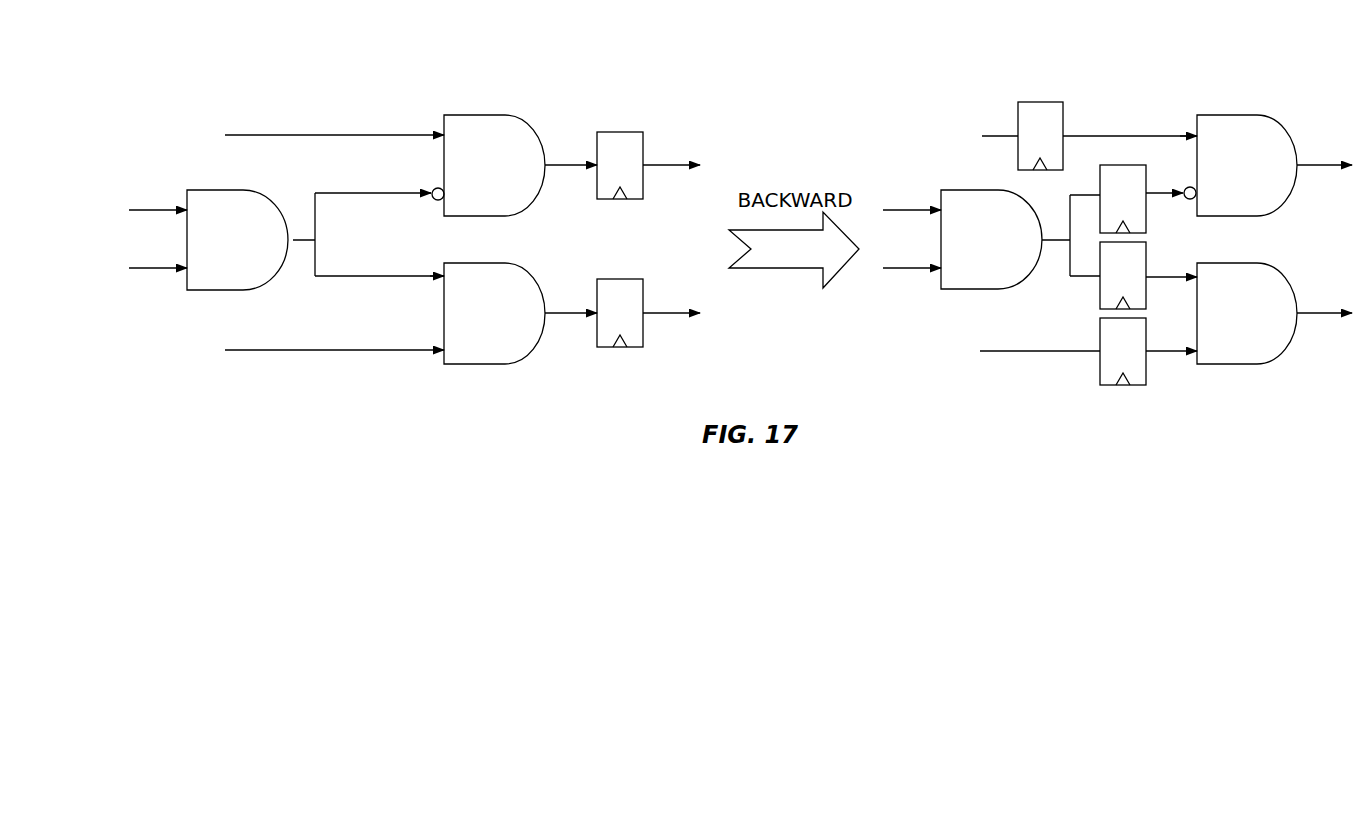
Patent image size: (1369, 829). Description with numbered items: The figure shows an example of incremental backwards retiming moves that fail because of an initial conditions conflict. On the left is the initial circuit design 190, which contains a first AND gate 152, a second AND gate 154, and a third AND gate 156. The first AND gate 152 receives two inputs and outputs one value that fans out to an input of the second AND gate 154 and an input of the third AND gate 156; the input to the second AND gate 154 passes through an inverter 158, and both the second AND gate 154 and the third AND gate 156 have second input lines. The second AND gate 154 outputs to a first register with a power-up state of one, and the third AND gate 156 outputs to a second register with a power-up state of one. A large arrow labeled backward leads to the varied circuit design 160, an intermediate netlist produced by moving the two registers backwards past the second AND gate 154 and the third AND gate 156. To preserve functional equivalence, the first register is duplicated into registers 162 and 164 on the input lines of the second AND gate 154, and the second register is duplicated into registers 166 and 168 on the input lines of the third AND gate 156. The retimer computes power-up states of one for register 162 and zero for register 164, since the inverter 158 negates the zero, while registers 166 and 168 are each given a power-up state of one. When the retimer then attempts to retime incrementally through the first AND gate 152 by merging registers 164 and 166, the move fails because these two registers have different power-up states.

The original circuit 190 is at (258, 61).
The varied circuit design 160 is at (1011, 62).
The first AND gate 152 is at (212, 190).
The second AND gate 154 is at (468, 115).
The third AND gate 156 is at (468, 263).
The inverter 158 is at (436, 188).
The register 162 is at (1043, 102).
The register 164 is at (1147, 215).
The register 166 is at (1100, 298).
The register 168 is at (1122, 388).